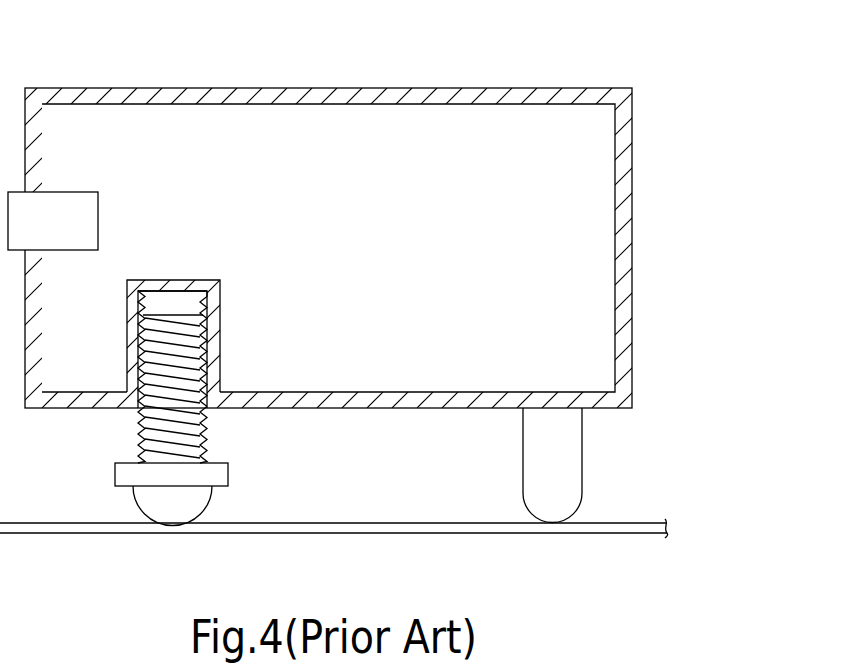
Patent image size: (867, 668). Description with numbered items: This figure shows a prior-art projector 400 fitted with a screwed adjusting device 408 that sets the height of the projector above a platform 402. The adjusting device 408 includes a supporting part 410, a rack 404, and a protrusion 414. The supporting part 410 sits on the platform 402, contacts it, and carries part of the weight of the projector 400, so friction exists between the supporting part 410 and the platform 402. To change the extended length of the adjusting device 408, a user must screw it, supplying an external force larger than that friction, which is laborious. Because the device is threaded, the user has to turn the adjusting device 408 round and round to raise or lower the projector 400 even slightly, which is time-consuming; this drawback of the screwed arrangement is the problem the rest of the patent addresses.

The projector 400 is at (589, 22).
The platform 402 is at (398, 525).
The rack 404 is at (215, 323).
The adjusting device 408 is at (157, 422).
The supporting part 410 is at (185, 508).
The protrusion 414 is at (202, 423).